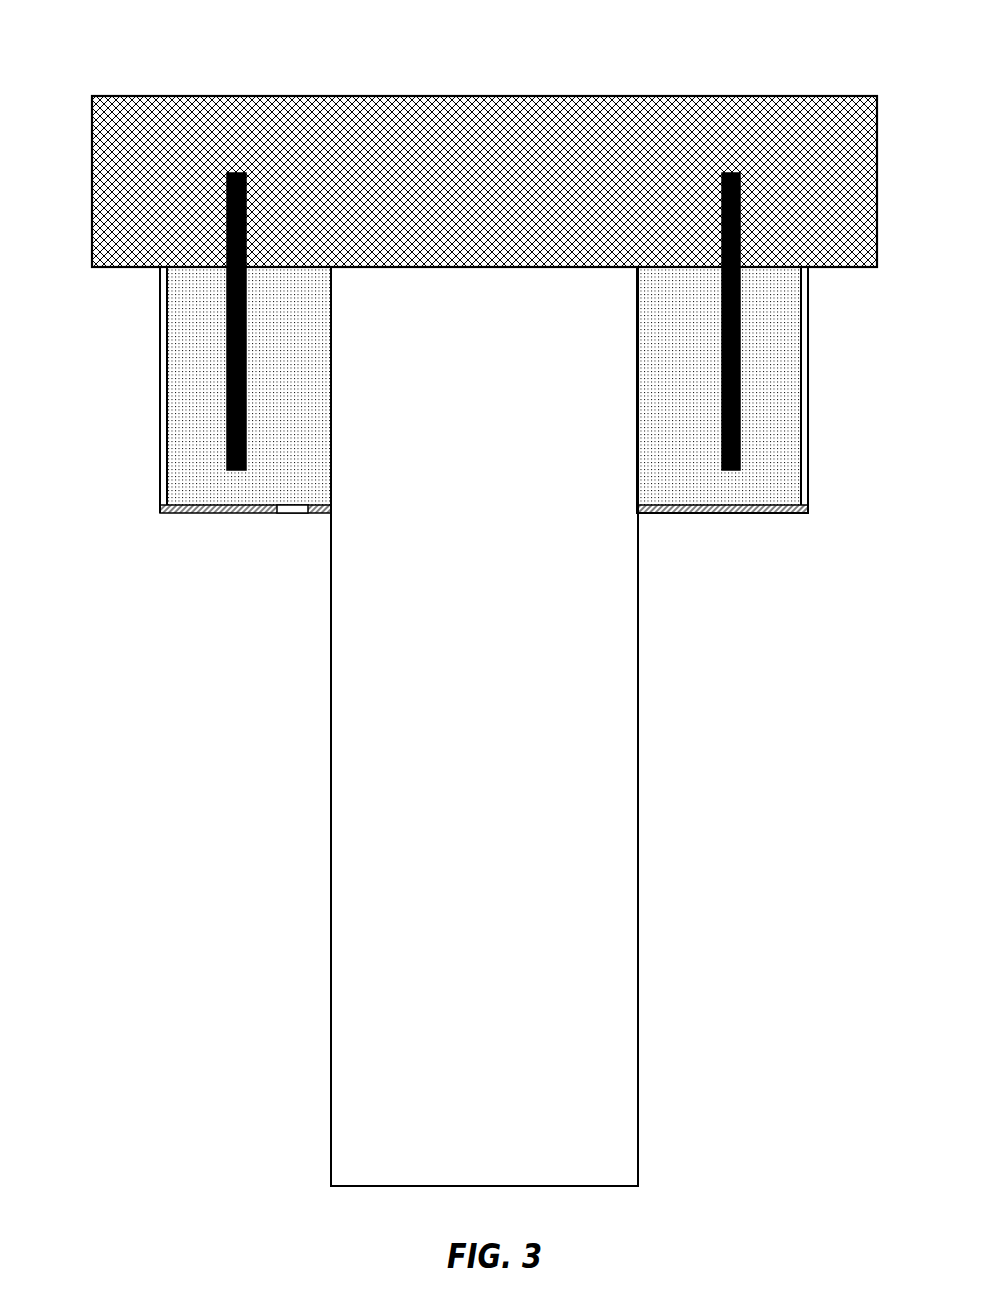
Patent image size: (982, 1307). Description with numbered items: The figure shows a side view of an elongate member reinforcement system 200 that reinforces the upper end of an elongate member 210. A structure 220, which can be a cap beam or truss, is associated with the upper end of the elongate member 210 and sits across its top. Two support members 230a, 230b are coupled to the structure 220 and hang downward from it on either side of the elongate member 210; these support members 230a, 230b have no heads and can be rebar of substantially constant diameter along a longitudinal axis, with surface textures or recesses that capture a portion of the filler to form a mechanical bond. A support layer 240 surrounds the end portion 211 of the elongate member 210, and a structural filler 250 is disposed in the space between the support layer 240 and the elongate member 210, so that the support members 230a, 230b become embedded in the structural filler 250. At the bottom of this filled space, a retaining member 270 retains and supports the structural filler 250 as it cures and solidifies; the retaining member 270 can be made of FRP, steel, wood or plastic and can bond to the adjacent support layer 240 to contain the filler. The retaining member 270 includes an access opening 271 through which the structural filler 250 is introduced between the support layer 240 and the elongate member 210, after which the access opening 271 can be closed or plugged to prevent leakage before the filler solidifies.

The elongate member reinforcement system 200 is at (138, 50).
The elongate member 210 is at (331, 707).
The end portion 211 is at (671, 448).
The structure 220 is at (130, 268).
The support member 230a is at (227, 430).
The support member 230b is at (740, 433).
The support layer 240 is at (160, 375).
The structural filler 250 is at (305, 357).
The retaining member 270 is at (210, 514).
The access opening 271 is at (293, 528).